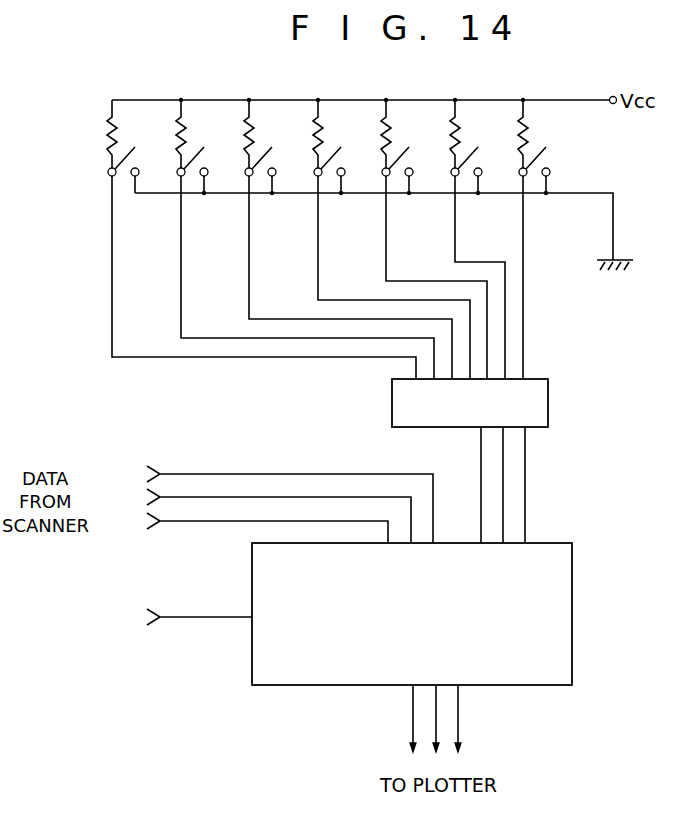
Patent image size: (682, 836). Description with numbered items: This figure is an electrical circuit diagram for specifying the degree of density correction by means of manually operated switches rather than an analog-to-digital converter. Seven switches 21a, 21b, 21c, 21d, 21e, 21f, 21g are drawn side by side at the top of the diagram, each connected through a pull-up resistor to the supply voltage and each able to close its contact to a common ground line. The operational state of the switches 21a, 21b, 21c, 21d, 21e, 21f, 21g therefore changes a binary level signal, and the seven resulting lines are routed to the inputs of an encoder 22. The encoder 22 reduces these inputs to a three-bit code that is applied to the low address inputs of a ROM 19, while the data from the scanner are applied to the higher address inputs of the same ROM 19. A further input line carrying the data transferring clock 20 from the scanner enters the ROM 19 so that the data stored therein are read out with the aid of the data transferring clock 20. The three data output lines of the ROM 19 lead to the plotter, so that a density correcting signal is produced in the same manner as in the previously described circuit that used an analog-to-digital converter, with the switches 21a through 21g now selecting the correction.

The switch 21a is at (126, 177).
The switch 21b is at (195, 177).
The switch 21c is at (263, 177).
The switch 21d is at (332, 177).
The switch 21e is at (400, 177).
The switch 21f is at (469, 177).
The switch 21g is at (537, 177).
The encoder 22 is at (548, 400).
The data transferring clock 20 is at (207, 617).
The ROM 19 is at (278, 686).